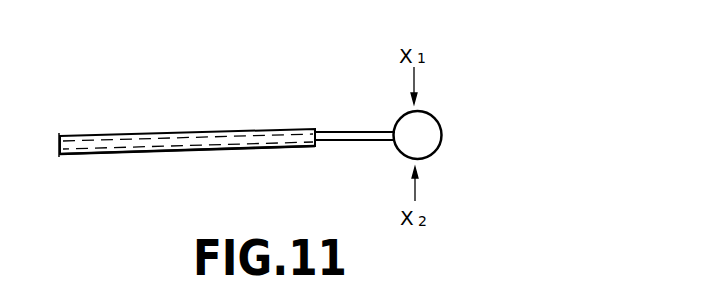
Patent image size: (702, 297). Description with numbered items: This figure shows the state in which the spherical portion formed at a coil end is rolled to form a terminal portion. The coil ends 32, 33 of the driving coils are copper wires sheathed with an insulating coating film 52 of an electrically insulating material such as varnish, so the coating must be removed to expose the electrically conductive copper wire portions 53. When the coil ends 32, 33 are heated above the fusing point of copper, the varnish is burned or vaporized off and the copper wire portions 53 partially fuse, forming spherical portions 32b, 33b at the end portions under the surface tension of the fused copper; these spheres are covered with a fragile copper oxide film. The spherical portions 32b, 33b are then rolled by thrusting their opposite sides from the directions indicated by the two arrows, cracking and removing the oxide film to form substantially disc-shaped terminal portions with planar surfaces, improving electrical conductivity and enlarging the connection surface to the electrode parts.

The coil end 32 is at (187, 105).
The coil end 33 is at (210, 132).
The spherical portion 32b is at (501, 135).
The spherical portion 33b is at (441, 135).
The insulating coating film 52 is at (195, 143).
The copper wire portion 53 is at (355, 141).